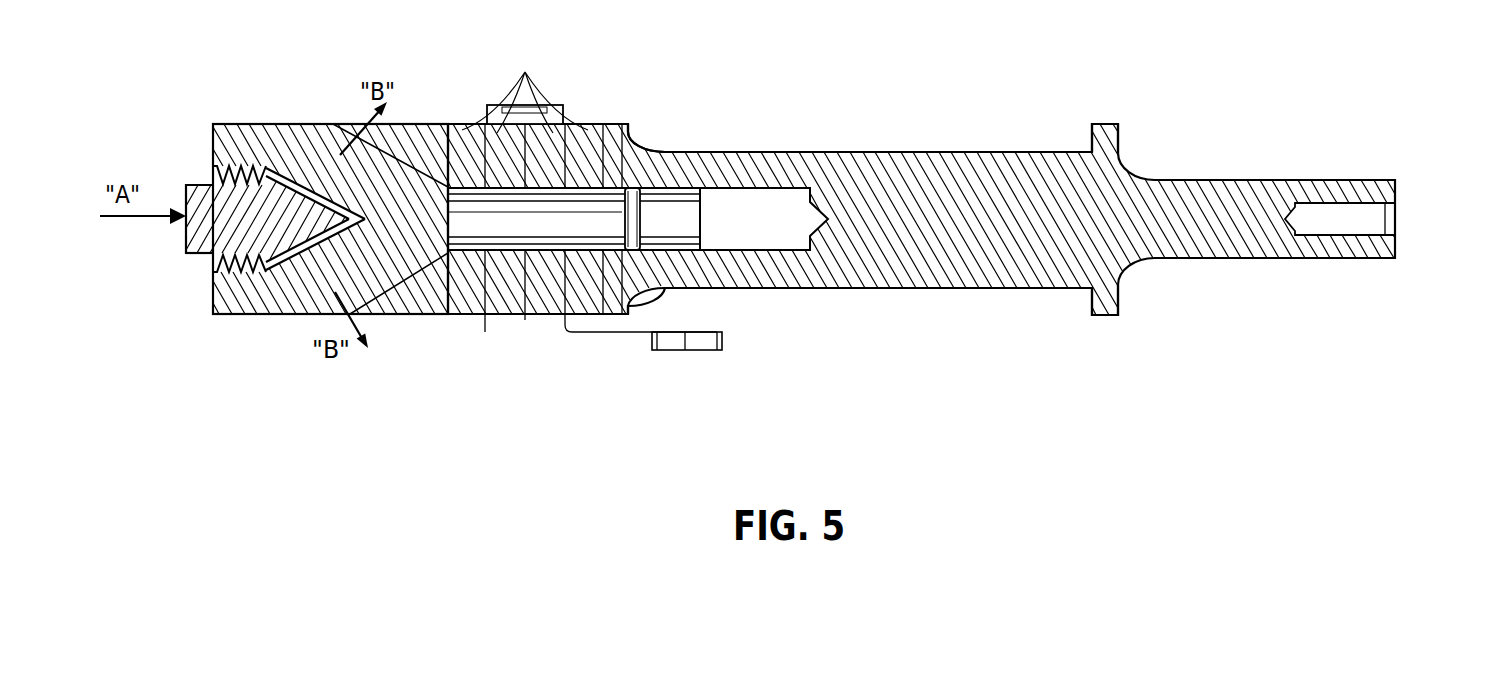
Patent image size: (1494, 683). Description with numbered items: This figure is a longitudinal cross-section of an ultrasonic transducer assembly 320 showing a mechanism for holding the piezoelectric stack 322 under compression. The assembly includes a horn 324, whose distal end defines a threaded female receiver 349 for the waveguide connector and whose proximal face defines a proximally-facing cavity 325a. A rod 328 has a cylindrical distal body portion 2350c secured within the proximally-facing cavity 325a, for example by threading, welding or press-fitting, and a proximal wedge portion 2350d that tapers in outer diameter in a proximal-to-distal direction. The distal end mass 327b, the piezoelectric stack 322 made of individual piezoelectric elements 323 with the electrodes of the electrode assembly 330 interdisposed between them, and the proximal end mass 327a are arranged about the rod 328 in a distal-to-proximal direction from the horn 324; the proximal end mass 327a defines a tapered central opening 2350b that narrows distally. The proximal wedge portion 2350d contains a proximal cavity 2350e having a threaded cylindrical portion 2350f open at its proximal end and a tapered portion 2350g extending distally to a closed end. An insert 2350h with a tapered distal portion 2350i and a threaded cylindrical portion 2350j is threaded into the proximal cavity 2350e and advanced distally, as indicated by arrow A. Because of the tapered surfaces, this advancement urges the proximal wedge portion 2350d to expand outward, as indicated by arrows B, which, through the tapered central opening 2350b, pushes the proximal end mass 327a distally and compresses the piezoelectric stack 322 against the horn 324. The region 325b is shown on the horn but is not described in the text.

The ultrasonic transducer assembly 320 is at (918, 82).
The piezoelectric stack 322 is at (598, 343).
The piezoelectric element 323 is at (525, 72).
The horn 324 is at (950, 272).
The proximally-facing cavity 325a is at (772, 202).
The flange 325b is at (1088, 140).
The proximal end mass 327a is at (408, 126).
The distal end mass 327b is at (618, 134).
The rod 328 is at (590, 203).
The electrode assembly 330 is at (703, 350).
The threaded female receiver 349 is at (1370, 222).
The tapered central opening 2350b is at (368, 292).
The cylindrical distal body portion 2350c is at (577, 215).
The proximal wedge portion 2350d is at (405, 256).
The proximal cavity 2350e is at (218, 176).
The threaded cylindrical portion 2350f is at (238, 240).
The tapered portion 2350g is at (287, 258).
The insert 2350h is at (200, 253).
The tapered distal portion 2350i is at (305, 216).
The threaded cylindrical portion 2350j is at (233, 218).